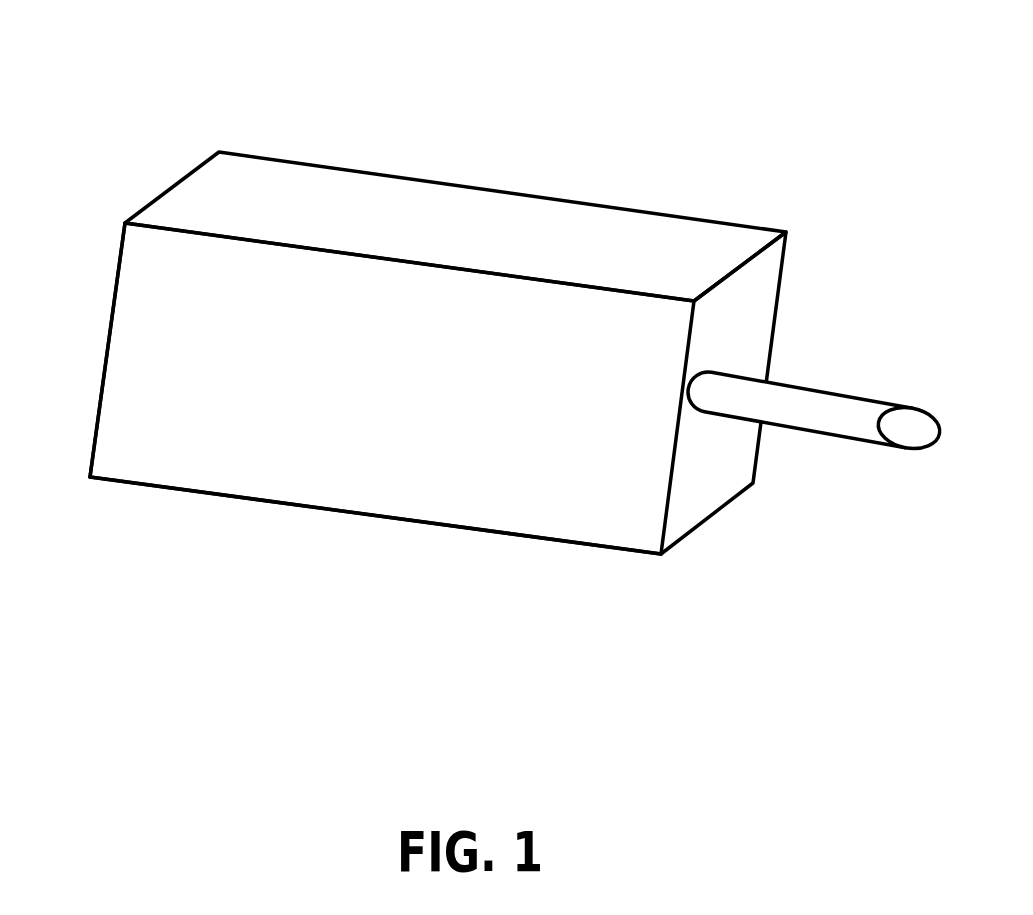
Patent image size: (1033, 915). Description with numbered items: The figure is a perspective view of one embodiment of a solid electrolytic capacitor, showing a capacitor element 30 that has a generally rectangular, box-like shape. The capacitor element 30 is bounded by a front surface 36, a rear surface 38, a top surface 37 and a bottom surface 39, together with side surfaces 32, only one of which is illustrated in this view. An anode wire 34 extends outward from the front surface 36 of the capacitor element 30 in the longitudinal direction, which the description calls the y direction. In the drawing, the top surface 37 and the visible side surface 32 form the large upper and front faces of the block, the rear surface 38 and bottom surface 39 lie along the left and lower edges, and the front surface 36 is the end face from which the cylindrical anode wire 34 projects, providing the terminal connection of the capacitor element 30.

The capacitor element 30 is at (493, 352).
The side surface 32 is at (187, 453).
The anode wire 34 is at (853, 392).
The front surface 36 is at (750, 313).
The top surface 37 is at (273, 192).
The rear surface 38 is at (107, 340).
The bottom surface 39 is at (418, 525).